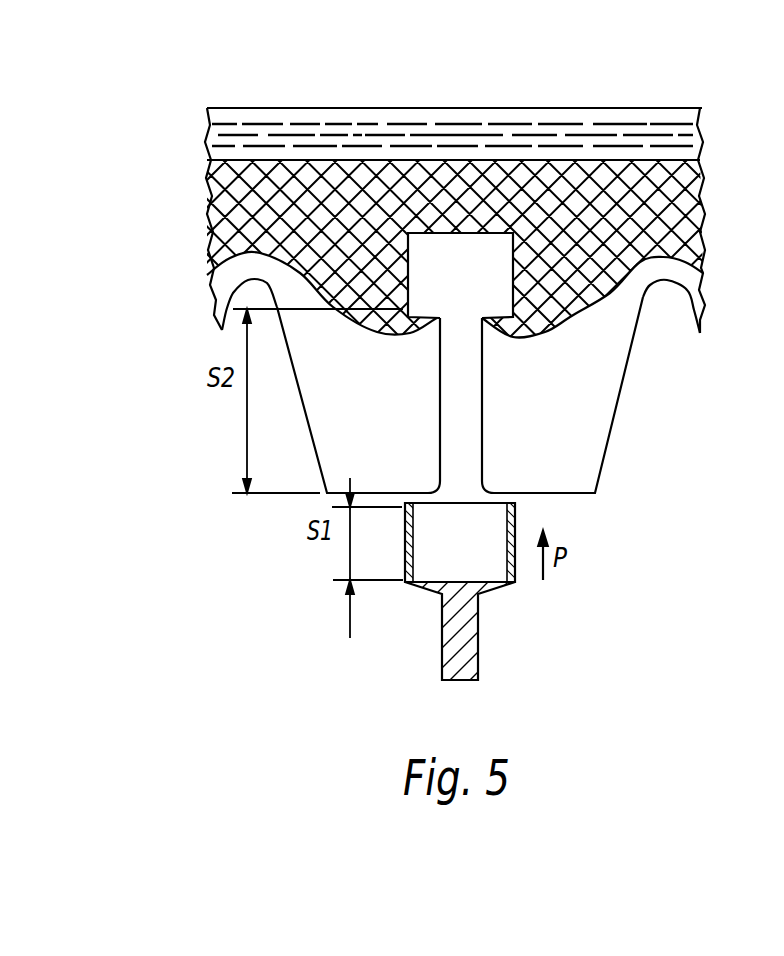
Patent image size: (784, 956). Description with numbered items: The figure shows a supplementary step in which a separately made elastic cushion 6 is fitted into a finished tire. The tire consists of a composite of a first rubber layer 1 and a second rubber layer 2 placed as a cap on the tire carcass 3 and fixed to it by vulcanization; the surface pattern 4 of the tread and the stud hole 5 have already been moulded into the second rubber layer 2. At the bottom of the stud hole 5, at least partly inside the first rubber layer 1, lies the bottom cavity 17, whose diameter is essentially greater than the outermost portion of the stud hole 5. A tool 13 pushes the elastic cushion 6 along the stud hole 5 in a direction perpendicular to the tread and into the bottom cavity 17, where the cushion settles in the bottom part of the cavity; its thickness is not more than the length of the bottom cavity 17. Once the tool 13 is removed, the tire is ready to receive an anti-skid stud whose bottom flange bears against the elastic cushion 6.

The first rubber layer 1 is at (681, 215).
The second rubber layer 2 is at (693, 277).
The tire carcass 3 is at (503, 130).
The surface pattern 4 is at (676, 351).
The stud hole 5 is at (483, 403).
The elastic cushion 6 is at (443, 567).
The tool 13 is at (461, 633).
The bottom cavity 17 is at (472, 282).